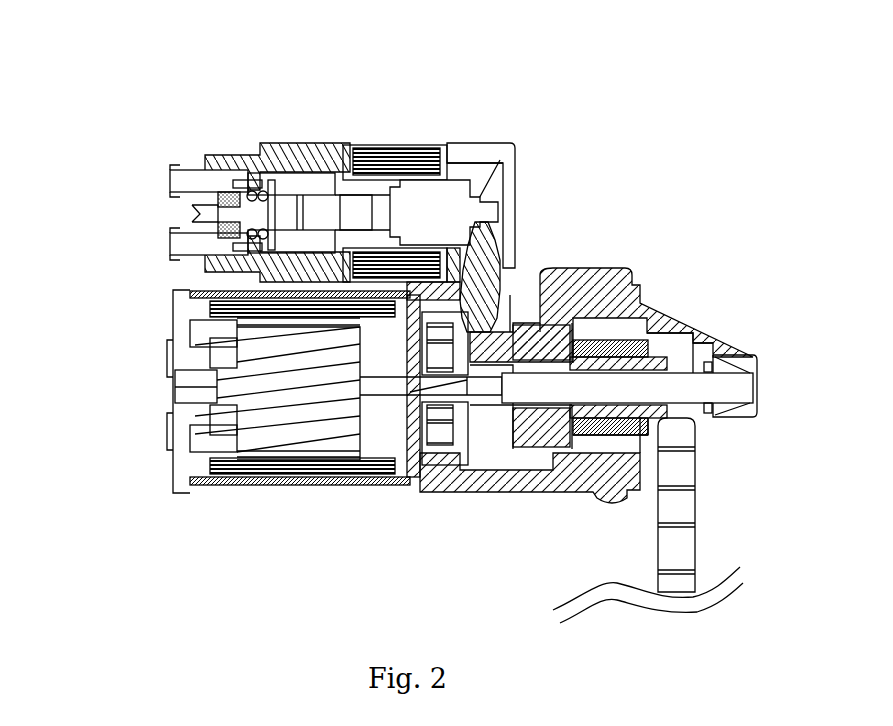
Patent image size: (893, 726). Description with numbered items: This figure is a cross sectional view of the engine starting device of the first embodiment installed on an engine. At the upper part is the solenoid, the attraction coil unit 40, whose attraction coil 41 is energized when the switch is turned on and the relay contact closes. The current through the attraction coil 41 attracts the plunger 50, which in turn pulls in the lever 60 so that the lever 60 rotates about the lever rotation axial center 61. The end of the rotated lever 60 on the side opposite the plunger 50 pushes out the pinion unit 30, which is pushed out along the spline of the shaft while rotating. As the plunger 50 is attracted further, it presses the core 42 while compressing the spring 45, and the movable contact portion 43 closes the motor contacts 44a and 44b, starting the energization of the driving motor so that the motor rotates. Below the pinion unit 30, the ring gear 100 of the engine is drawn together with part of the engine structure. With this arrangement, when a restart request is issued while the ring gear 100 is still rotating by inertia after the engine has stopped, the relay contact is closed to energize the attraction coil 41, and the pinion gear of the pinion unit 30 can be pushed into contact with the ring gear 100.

The pinion unit 30 is at (593, 272).
The attraction coil unit 40 is at (347, 220).
The attraction coil 41 is at (390, 197).
The core 42 is at (380, 147).
The movable contact portion 43 is at (258, 182).
The motor contact 44a is at (207, 155).
The motor contact 44b is at (252, 247).
The spring 45 is at (205, 236).
The plunger 50 is at (512, 164).
The lever 60 is at (497, 250).
The lever rotation axial center 61 is at (500, 275).
The ring gear 100 is at (680, 553).